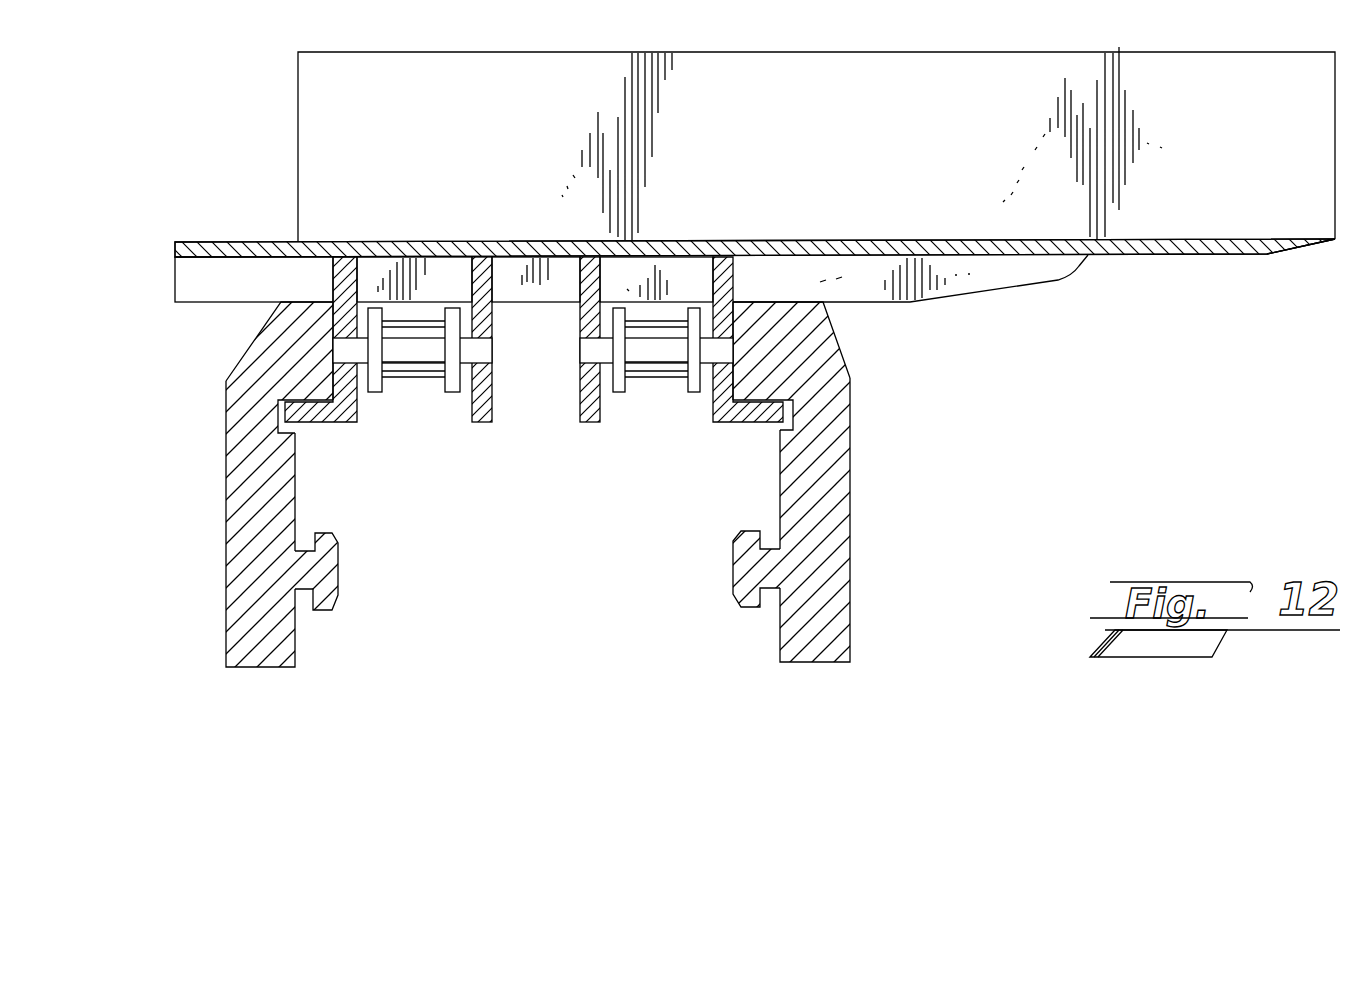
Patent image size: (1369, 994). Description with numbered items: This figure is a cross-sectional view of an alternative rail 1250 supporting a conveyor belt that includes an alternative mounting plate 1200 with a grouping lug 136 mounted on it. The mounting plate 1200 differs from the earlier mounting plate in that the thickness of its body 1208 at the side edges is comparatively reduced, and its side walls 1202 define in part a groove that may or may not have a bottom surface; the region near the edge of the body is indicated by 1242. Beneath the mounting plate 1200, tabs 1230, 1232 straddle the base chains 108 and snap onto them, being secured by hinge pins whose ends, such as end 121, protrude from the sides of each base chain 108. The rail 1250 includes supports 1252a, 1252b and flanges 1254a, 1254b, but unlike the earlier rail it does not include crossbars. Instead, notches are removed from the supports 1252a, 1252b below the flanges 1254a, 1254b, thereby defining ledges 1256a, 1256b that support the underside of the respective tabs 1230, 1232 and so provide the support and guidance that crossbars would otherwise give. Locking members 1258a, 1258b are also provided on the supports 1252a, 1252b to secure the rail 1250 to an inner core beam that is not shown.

The grouping lug 136 is at (862, 152).
The body 1208 is at (165, 263).
The tapered plate end 1242 is at (1082, 306).
The side walls 1202 is at (288, 293).
The mounting plate 1200 is at (967, 322).
The support 1252a is at (263, 667).
The support 1252b is at (813, 663).
The flange 1254a is at (313, 372).
The flange 1254b is at (760, 363).
The ledge 1256a is at (283, 441).
The ledge 1256b is at (783, 444).
The locking member 1258a is at (335, 607).
The locking member 1258b is at (748, 605).
The rail 1250 is at (896, 580).
The tab 1230 is at (310, 423).
The tab 1232 is at (737, 423).
The hinge pin end 121 is at (493, 348).
The base chain 108 is at (636, 395).